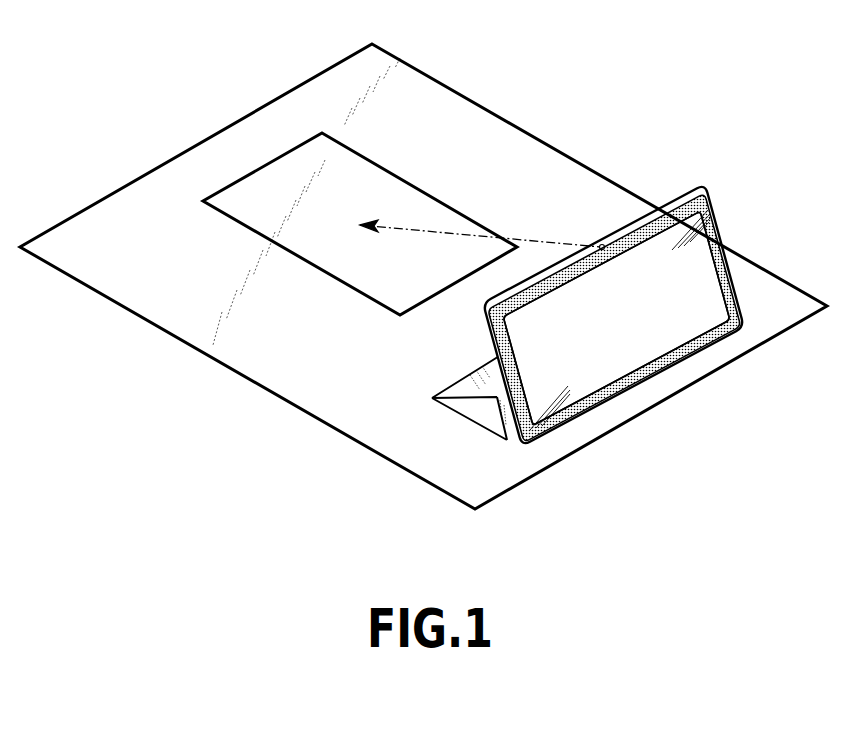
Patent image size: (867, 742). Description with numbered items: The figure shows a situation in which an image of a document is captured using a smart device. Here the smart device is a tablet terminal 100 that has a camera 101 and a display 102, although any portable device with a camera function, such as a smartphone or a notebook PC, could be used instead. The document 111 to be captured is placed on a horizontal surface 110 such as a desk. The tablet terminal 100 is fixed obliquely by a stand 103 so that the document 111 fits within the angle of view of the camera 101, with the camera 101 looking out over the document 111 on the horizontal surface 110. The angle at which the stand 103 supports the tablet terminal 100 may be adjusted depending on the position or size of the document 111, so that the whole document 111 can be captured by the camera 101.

The tablet terminal 100 is at (680, 187).
The camera 101 is at (601, 245).
The display 102 is at (675, 340).
The stand 103 is at (473, 410).
The horizontal surface 110 is at (413, 63).
The document 111 is at (265, 168).